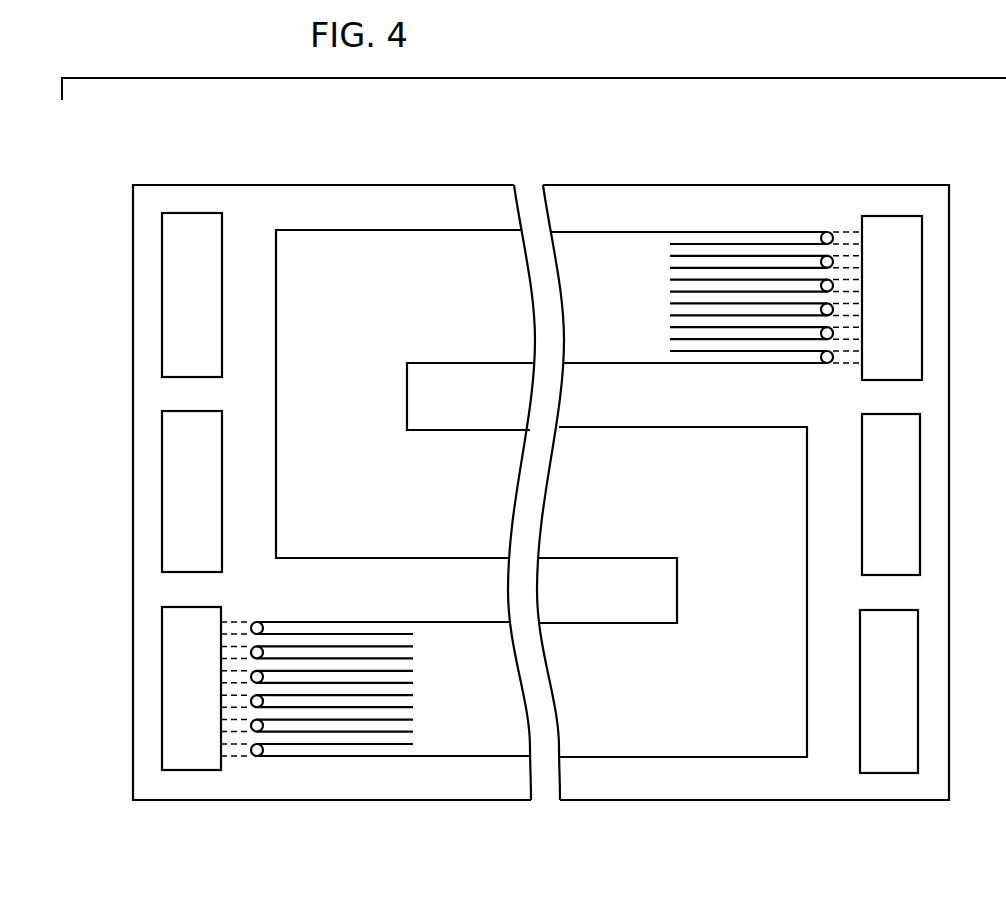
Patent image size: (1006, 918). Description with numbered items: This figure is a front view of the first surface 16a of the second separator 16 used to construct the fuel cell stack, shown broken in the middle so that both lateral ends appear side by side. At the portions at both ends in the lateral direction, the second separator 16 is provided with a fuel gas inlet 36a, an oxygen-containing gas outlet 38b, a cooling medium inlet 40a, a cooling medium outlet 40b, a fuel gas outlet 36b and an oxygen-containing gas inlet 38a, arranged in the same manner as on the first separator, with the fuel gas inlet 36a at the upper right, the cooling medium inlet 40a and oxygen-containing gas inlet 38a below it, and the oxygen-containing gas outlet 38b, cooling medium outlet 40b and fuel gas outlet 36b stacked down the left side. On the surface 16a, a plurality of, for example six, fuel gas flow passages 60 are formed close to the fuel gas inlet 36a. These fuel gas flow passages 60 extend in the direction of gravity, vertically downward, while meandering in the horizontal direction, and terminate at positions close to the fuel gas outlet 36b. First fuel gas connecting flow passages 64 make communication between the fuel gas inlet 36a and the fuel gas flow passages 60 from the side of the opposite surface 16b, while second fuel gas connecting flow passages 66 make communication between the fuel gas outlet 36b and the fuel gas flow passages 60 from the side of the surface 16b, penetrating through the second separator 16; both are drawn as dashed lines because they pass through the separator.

The second separator 16 is at (704, 157).
The surface 16a is at (613, 203).
The surface 16b is at (393, 203).
The fuel gas inlet 36a is at (895, 302).
The fuel gas outlet 36b is at (176, 689).
The oxygen-containing gas inlet 38a is at (893, 691).
The oxygen-containing gas outlet 38b is at (178, 307).
The cooling medium inlet 40a is at (893, 495).
The cooling medium outlet 40b is at (178, 498).
The fuel gas flow passages 60 is at (735, 262).
The first fuel gas connecting flow passages 64 is at (833, 239).
The second fuel gas connecting flow passages 66 is at (251, 653).